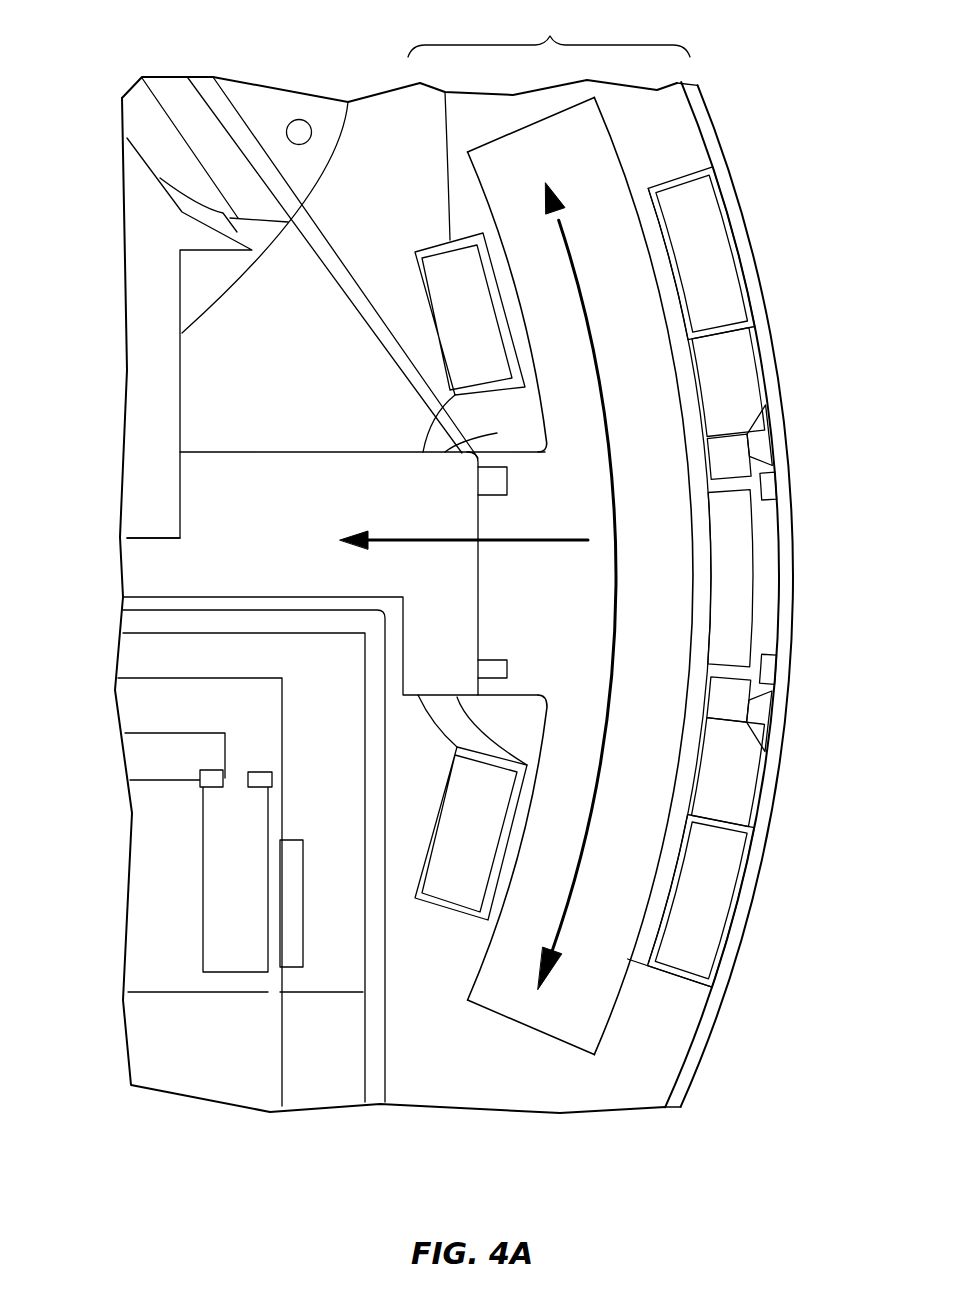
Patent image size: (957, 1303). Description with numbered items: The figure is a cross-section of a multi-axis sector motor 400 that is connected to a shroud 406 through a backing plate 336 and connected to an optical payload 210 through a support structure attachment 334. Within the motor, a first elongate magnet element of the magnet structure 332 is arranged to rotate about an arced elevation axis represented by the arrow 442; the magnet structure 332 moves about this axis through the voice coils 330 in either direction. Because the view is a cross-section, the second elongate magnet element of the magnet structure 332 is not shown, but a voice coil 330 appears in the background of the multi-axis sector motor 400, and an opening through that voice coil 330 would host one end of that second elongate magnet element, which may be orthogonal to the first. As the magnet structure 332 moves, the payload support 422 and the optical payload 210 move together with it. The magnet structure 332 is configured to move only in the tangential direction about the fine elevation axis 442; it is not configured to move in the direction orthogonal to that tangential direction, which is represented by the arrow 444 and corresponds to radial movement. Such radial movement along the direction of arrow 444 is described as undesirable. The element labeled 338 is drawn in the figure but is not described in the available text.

The optical payload 210 is at (153, 250).
The voice coils 330 is at (713, 287).
The magnet structure 332 is at (660, 617).
The support structure attachment 334 is at (497, 503).
The backing plate 336 is at (762, 565).
The arc carrier 338 is at (583, 990).
The multi-axis sector motor 400 is at (549, 29).
The shroud 406 is at (705, 101).
The payload support 422 is at (170, 561).
The arced elevation axis arrow 442 is at (600, 423).
The radial movement arrow 444 is at (100, 687).